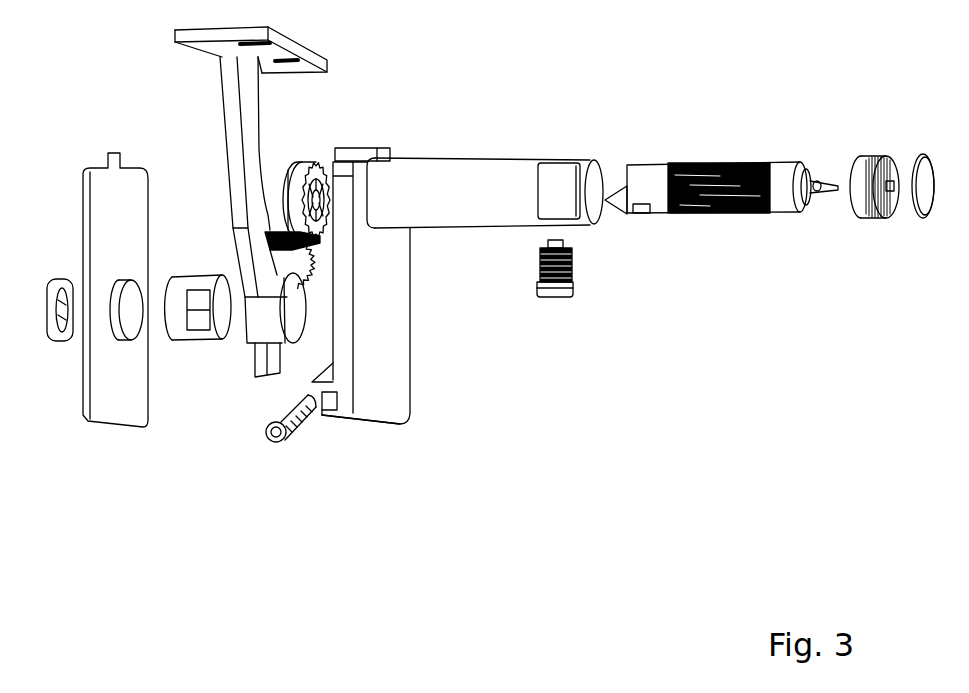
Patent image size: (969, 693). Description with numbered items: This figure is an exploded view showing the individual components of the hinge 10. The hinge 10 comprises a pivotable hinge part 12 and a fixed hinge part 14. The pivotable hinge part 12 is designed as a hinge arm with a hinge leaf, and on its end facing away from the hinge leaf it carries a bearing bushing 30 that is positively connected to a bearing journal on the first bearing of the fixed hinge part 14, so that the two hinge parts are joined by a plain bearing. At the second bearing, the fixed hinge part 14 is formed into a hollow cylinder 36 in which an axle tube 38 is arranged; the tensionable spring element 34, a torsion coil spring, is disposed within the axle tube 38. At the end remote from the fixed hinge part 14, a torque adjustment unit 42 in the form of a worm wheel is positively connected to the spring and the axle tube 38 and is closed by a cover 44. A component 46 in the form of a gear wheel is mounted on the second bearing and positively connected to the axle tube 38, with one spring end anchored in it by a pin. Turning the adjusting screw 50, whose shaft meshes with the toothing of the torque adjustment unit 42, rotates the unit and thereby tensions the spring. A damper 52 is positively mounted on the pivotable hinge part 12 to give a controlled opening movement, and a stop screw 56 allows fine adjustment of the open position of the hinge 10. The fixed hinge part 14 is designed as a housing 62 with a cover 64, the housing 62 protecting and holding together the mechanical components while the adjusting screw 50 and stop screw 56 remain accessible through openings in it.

The hinge 10 is at (73, 38).
The pivotable hinge part 12 is at (216, 108).
The fixed hinge part 14 is at (398, 427).
The bearing bushing 30 is at (253, 378).
The tensionable spring element 34 is at (810, 218).
The hollow cylinder 36 is at (448, 212).
The axle tube 38 is at (686, 215).
The torque adjustment unit 42 is at (870, 218).
The cover 44 is at (920, 225).
The component 46 is at (300, 160).
The adjusting screw 50 is at (568, 300).
The damper 52 is at (178, 342).
The stop screw 56 is at (290, 442).
The housing 62 is at (352, 422).
The cover 64 is at (107, 400).